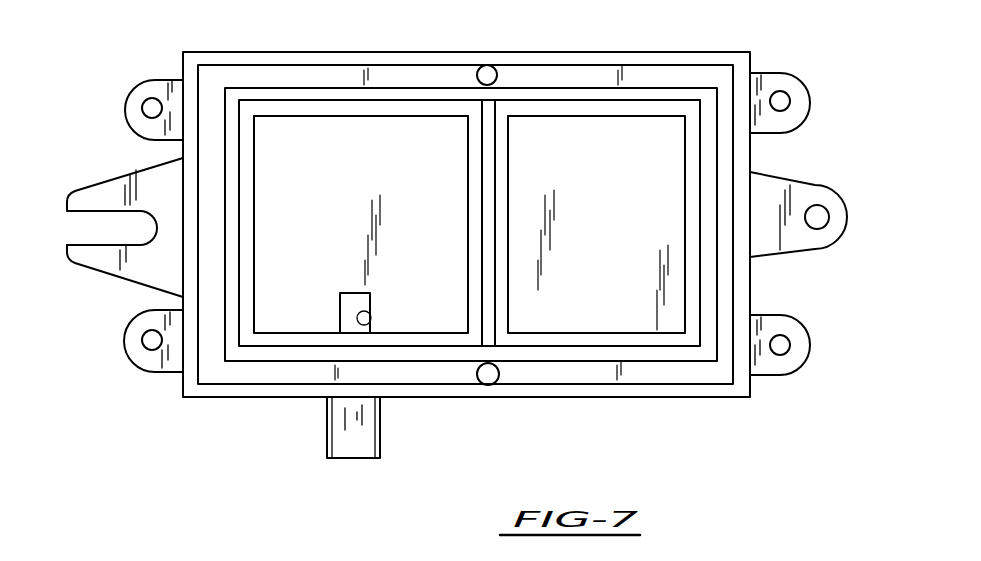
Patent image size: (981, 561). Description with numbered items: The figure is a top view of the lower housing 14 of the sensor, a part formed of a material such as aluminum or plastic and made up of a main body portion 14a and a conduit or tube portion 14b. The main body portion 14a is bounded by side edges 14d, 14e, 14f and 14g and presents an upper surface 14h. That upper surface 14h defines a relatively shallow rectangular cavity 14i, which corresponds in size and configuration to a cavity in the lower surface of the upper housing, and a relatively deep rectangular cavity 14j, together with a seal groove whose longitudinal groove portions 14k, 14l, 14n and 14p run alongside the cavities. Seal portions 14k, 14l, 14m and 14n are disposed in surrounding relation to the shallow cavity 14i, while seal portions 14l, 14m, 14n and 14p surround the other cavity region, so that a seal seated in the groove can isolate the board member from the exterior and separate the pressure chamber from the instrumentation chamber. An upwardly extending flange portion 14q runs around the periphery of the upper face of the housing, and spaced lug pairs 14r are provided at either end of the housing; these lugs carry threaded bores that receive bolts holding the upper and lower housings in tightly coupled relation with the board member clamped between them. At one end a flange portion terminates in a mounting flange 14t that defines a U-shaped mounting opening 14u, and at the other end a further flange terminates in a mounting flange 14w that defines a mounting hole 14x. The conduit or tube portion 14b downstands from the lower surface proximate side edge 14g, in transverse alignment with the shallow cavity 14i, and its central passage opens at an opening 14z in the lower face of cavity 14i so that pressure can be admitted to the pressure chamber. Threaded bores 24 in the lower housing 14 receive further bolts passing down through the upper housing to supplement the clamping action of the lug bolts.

The lower housing 14 is at (182, 406).
The main body portion 14a is at (516, 46).
The conduit or tube portion 14b is at (380, 441).
The side edge 14d is at (183, 275).
The side edge 14e is at (398, 58).
The side edge 14f is at (752, 136).
The side edge 14g is at (633, 400).
The upper surface 14h is at (632, 172).
The shallow rectangular cavity 14i is at (470, 203).
The deep rectangular cavity 14j is at (602, 333).
The longitudinal groove portion 14k is at (287, 98).
The longitudinal groove portion 14l is at (311, 346).
The seal portion 14m is at (236, 222).
The longitudinal groove portion 14n is at (484, 262).
The longitudinal groove portion 14p is at (703, 226).
The upwardly extending flange portion 14q is at (303, 397).
The lug pairs 14r is at (135, 85).
The mounting flange 14t is at (143, 167).
The U-shaped mounting opening 14u is at (100, 214).
The mounting flange 14w is at (803, 242).
The mounting hole 14x is at (813, 210).
The opening 14z is at (371, 318).
The threaded bores 24 is at (478, 86).